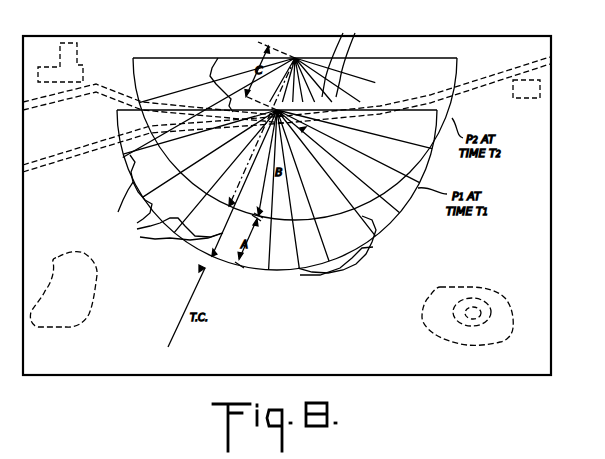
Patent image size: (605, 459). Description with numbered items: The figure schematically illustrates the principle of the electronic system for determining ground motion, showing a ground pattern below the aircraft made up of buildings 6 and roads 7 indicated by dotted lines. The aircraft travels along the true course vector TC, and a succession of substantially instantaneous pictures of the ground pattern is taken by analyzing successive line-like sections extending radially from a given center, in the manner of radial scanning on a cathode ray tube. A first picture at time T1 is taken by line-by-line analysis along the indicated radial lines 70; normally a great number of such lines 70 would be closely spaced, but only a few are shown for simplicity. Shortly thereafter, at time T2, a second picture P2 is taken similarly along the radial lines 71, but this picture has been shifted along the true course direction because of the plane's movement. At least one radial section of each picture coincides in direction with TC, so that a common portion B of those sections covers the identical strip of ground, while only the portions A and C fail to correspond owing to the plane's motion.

The buildings 6 is at (77, 58).
The roads 7 is at (52, 97).
The radial lines 70 is at (145, 227).
The radial lines 71 is at (220, 63).